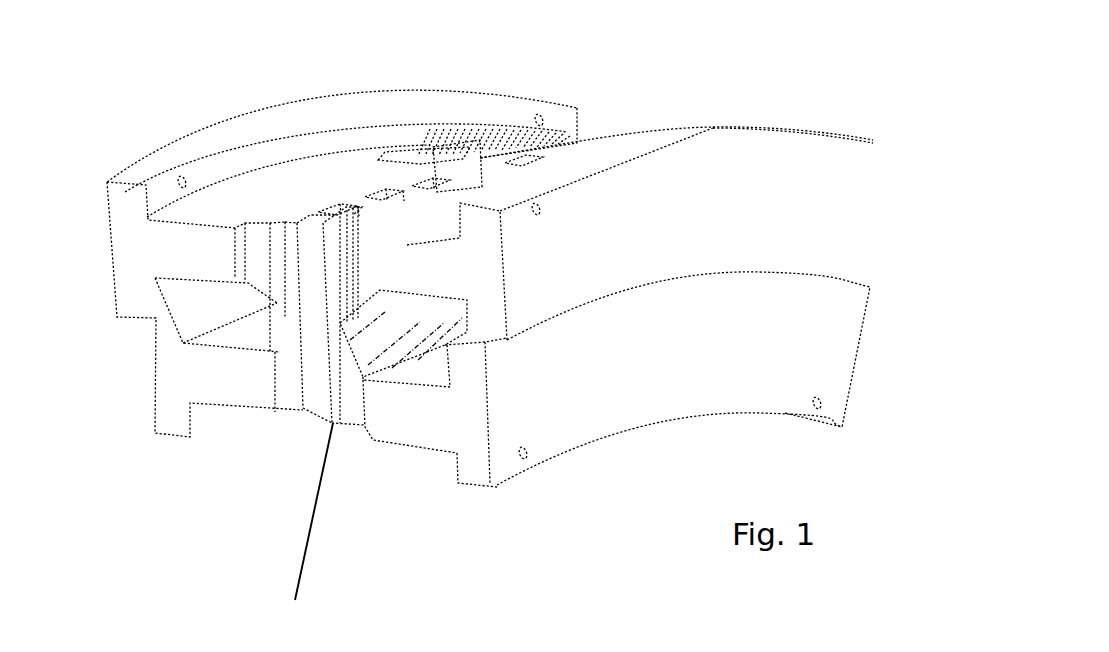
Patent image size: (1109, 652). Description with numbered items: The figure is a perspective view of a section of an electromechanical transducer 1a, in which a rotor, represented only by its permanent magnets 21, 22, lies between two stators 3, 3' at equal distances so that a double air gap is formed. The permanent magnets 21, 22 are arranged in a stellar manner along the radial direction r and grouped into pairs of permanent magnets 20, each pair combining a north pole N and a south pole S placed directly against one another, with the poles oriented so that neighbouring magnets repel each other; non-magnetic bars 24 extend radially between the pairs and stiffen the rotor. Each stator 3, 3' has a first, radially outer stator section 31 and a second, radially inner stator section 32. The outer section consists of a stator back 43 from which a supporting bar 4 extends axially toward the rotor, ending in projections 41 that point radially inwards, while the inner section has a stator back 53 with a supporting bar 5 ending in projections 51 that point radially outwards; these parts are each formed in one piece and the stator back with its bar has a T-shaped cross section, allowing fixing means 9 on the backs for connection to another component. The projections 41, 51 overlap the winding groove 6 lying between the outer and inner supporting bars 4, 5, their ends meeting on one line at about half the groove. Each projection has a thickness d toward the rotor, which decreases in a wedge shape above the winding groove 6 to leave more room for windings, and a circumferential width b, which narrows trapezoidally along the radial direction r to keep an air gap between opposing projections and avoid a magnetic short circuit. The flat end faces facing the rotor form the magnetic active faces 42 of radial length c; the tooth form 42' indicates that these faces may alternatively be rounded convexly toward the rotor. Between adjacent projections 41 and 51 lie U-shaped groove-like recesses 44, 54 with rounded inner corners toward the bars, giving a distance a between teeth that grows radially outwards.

The electromechanical transducer 1a is at (723, 88).
The stator 3 is at (201, 338).
The stator 3' is at (657, 408).
The first, radially outer stator section 31 is at (823, 124).
The second, radially inner stator section 32 is at (853, 388).
The supporting bar 4 is at (407, 247).
The projection 41 is at (287, 288).
The magnetic active face 42 is at (293, 349).
The tooth form 42' is at (181, 186).
The stator back 43 is at (478, 230).
The groove-like recess 44 is at (402, 158).
The pair of permanent magnets 20 is at (358, 188).
The bar 24 is at (345, 198).
The permanent magnet 21 is at (323, 433).
The permanent magnet 22 is at (338, 430).
The supporting bar 5 is at (390, 433).
The projection 51 is at (355, 432).
The stator back 53 is at (477, 473).
The groove-like recess 54 is at (402, 350).
The winding groove 6 is at (423, 367).
The fixing means 9 is at (525, 458).
The north pole N is at (330, 208).
The south pole S is at (317, 214).
The distance a is at (400, 323).
The width b is at (392, 358).
The length c is at (285, 232).
The thickness d is at (361, 415).
The radial direction r is at (235, 510).